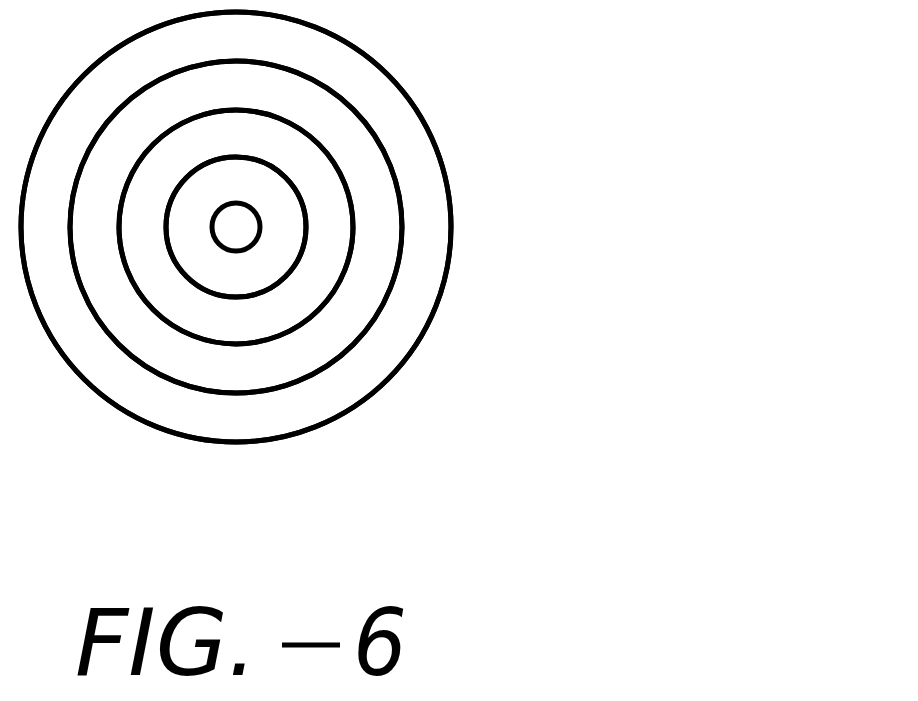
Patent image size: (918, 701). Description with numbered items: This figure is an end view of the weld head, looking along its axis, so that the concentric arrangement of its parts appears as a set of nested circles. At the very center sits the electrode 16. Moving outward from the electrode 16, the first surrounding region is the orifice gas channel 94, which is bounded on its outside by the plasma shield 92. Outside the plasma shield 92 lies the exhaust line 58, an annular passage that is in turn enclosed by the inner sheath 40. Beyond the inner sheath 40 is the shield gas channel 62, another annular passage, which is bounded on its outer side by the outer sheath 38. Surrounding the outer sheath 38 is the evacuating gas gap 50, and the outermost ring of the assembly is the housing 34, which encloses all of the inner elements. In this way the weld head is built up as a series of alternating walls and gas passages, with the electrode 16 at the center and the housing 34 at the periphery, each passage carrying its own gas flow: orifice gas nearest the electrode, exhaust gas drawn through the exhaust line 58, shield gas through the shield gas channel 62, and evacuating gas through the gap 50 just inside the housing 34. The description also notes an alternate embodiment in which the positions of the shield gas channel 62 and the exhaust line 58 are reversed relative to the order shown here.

The electrode 16 is at (238, 223).
The orifice gas channel 94 is at (277, 223).
The plasma shield 92 is at (306, 227).
The exhaust line 58 is at (333, 229).
The inner sheath 40 is at (336, 282).
The shield gas channel 62 is at (362, 310).
The outer sheath 38 is at (363, 337).
The evacuating gas gap 50 is at (367, 363).
The housing 34 is at (363, 407).